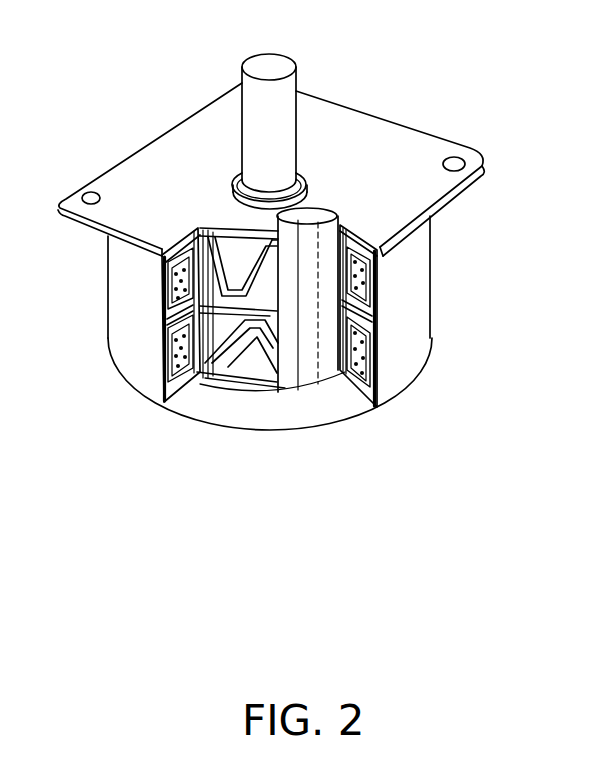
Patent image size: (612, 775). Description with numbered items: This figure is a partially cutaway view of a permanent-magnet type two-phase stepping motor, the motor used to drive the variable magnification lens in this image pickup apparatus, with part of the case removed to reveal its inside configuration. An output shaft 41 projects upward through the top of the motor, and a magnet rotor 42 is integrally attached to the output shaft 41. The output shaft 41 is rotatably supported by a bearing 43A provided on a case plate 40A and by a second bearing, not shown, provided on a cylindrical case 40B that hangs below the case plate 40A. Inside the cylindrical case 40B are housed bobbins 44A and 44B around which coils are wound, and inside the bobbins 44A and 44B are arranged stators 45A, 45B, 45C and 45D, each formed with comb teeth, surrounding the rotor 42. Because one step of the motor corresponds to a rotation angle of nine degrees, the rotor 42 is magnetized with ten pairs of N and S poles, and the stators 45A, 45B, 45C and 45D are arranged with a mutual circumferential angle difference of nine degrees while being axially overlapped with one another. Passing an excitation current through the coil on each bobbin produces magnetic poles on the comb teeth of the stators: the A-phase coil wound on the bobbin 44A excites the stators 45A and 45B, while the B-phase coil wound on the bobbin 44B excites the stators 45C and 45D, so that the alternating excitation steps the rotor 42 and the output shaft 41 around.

The case plate 40A is at (432, 180).
The cylindrical case 40B is at (415, 340).
The output shaft 41 is at (283, 116).
The magnet rotor 42 is at (337, 218).
The bearing 43A is at (240, 170).
The bobbin 44A is at (178, 237).
The bobbin 44B is at (190, 388).
The stator 45A is at (238, 250).
The stator 45B is at (253, 333).
The stator 45C is at (222, 348).
The stator 45D is at (263, 367).